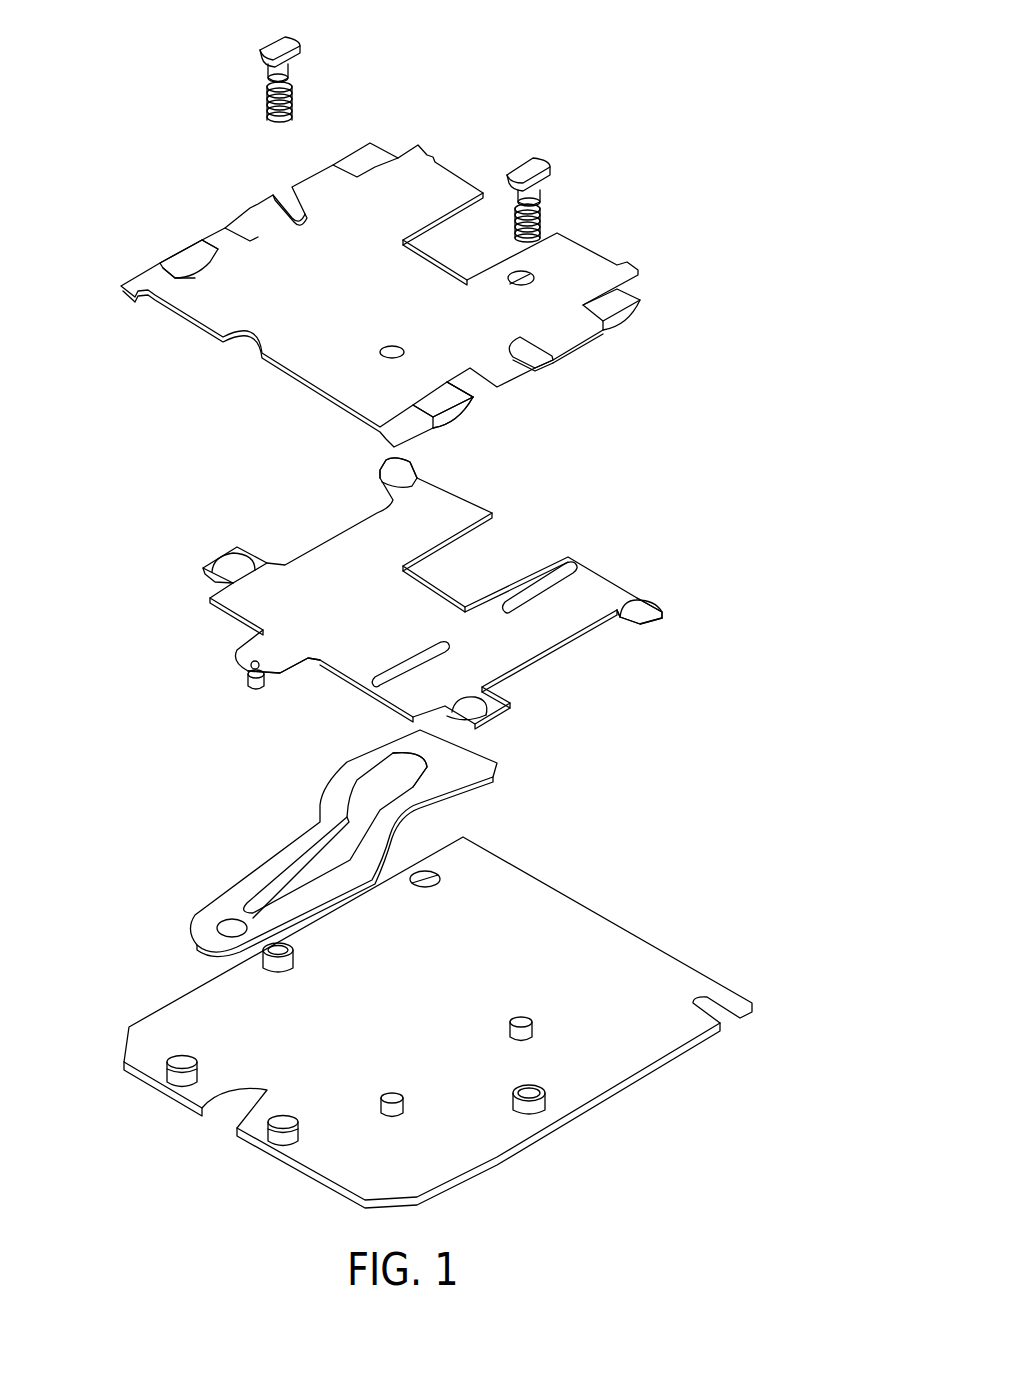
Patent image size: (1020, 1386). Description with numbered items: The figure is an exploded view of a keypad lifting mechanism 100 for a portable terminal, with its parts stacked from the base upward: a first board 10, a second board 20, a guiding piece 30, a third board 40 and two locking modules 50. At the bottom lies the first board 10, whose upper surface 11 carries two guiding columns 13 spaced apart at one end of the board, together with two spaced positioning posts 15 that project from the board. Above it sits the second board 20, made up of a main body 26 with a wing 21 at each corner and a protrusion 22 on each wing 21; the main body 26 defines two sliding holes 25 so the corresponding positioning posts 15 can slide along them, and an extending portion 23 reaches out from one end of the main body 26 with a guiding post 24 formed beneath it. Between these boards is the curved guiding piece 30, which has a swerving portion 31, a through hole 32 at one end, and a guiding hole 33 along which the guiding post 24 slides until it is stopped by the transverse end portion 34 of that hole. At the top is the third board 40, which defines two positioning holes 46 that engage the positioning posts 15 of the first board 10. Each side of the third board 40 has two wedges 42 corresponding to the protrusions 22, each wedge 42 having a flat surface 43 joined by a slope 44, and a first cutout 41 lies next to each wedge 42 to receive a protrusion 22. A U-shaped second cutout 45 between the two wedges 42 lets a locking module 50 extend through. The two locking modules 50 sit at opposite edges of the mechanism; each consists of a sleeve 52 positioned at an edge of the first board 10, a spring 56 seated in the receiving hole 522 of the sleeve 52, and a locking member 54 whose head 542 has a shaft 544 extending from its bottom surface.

The keypad lifting mechanism 100 is at (594, 52).
The first board 10 is at (460, 1022).
The base plate 11 is at (555, 920).
The guiding column 13 is at (281, 1135).
The positioning post 15 is at (530, 1020).
The second board 20 is at (620, 567).
The wing 21 is at (660, 620).
The protrusion 22 is at (642, 607).
The extending portion 23 is at (277, 660).
The guiding post 24 is at (247, 682).
The sliding hole 25 is at (545, 598).
The main body 26 is at (348, 570).
The guiding piece 30 is at (358, 837).
The swerving portion 31 is at (345, 762).
The through hole 32 is at (228, 925).
The guiding hole 33 is at (295, 886).
The transverse end portion 34 is at (430, 762).
The third board 40 is at (286, 168).
The first cutout 41 is at (398, 145).
The wedge 42 is at (165, 258).
The flat surface 43 is at (440, 430).
The slope 44 is at (457, 420).
The second cutout 45 is at (567, 347).
The positioning hole 46 is at (525, 275).
The locking module 50 is at (334, 111).
The sleeve 52 is at (606, 1112).
The receiving hole 522 is at (540, 1087).
The locking member 54 is at (209, 57).
The head 542 is at (258, 50).
The shaft 544 is at (270, 72).
The spring 56 is at (295, 110).